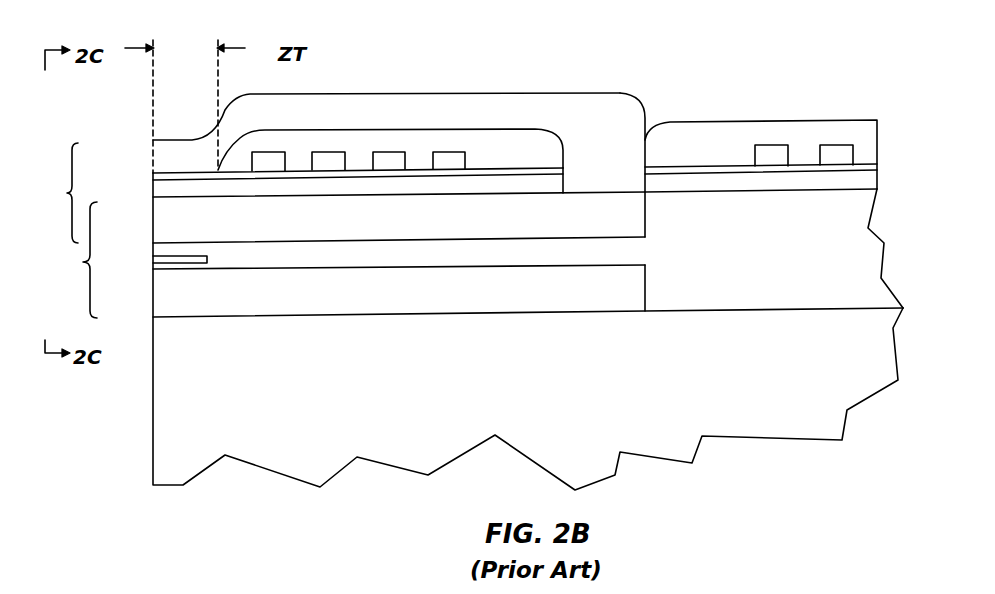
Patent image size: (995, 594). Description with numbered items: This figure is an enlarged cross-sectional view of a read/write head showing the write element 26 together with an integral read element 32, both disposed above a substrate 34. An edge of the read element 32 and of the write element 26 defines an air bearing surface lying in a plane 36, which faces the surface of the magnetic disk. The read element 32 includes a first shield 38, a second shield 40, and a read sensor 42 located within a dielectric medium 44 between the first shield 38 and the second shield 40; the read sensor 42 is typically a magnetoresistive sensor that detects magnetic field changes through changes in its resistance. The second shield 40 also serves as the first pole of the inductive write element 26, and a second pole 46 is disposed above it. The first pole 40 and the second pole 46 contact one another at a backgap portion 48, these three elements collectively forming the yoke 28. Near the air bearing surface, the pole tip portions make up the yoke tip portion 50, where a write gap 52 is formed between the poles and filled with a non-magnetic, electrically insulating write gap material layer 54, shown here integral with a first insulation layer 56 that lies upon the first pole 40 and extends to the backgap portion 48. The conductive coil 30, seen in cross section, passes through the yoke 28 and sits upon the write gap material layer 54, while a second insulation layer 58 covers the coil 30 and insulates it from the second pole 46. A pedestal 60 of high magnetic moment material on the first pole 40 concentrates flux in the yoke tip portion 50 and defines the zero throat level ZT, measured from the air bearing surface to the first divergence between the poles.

The write element 26 is at (59, 193).
The yoke 28 is at (636, 94).
The conductive coil 30 is at (325, 157).
The read element 32 is at (76, 260).
The substrate 34 is at (160, 384).
The plane 36 is at (153, 97).
The first shield 38 is at (407, 293).
The second shield 40 is at (386, 228).
The read sensor 42 is at (153, 262).
The dielectric medium 44 is at (290, 257).
The second pole 46 is at (442, 113).
The backgap portion 48 is at (647, 113).
The yoke tip portion 50 is at (174, 169).
The write gap 52 is at (153, 175).
The write gap material layer 54 is at (280, 177).
The first insulation layer 56 is at (522, 185).
The second insulation layer 58 is at (520, 140).
The pedestal 60 is at (160, 196).